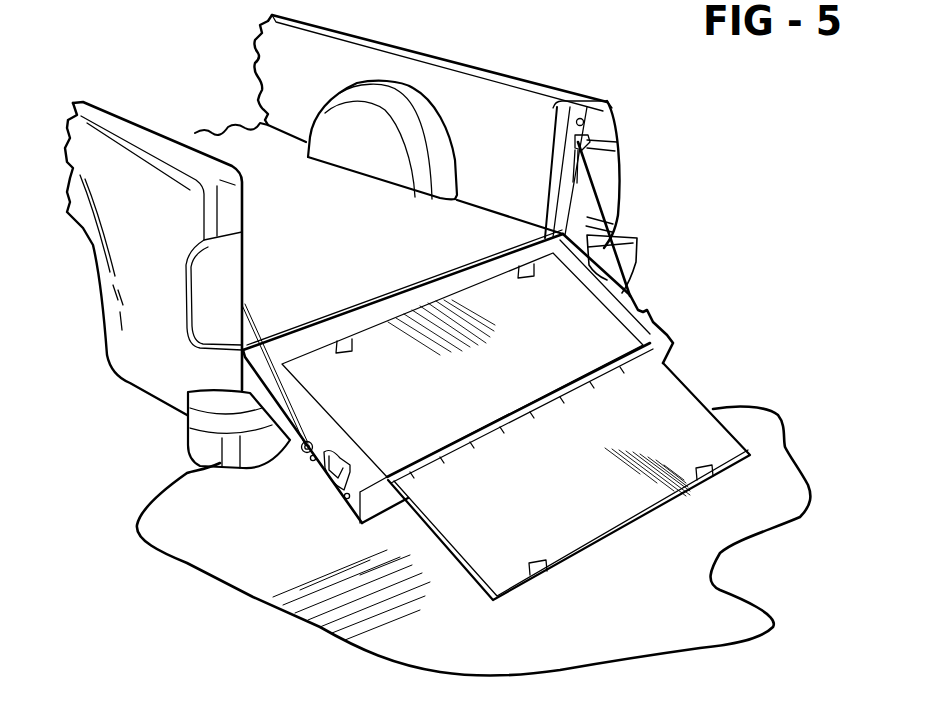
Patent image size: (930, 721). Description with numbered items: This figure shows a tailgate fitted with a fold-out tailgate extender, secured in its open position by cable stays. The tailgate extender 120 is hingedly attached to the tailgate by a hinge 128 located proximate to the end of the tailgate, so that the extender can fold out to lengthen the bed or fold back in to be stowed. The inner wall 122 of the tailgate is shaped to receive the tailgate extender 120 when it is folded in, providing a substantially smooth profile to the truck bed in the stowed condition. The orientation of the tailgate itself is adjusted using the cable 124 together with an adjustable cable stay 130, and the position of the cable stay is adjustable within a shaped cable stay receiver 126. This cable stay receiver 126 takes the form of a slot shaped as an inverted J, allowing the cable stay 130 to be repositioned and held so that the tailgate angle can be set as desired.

The tailgate extender 120 is at (555, 477).
The inner wall 122 is at (542, 358).
The cable 124 is at (605, 212).
The cable stay receiver 126 is at (575, 141).
The hinge 128 is at (624, 362).
The adjustable cable stay 130 is at (577, 175).